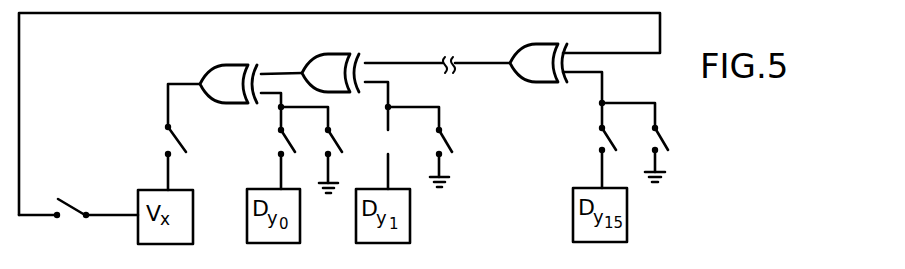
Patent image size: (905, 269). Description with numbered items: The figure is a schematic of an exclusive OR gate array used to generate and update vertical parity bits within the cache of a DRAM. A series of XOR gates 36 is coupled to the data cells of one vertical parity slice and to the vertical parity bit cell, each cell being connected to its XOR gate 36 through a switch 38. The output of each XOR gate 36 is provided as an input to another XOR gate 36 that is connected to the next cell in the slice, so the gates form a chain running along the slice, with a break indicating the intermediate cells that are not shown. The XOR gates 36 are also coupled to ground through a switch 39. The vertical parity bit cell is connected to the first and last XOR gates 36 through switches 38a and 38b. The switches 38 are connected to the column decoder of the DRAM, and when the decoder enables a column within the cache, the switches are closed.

The exclusive OR gate 36 is at (228, 64).
The switch 38 is at (276, 144).
The switch 38a is at (74, 222).
The switch 38b is at (164, 144).
The switch 39 is at (442, 117).